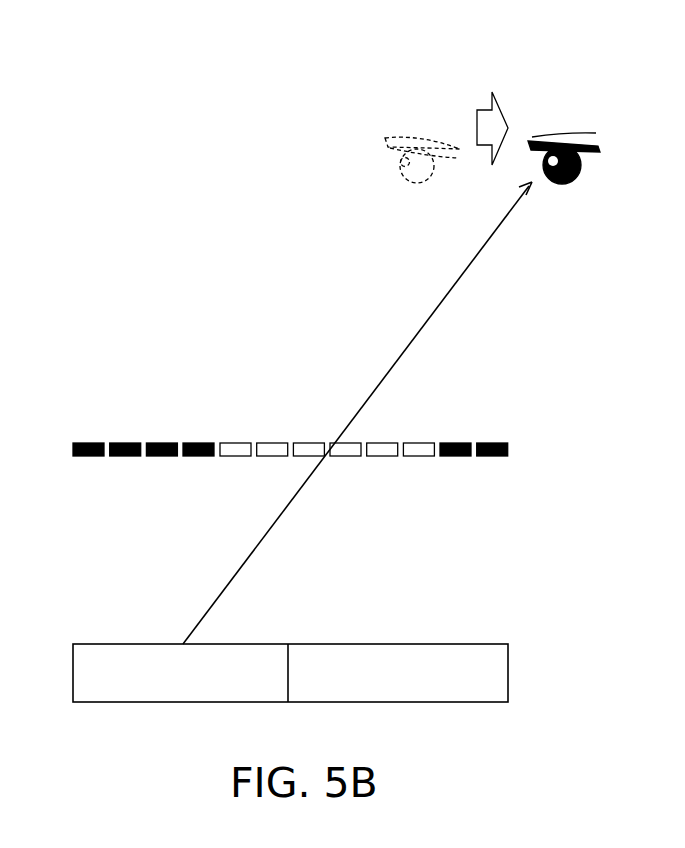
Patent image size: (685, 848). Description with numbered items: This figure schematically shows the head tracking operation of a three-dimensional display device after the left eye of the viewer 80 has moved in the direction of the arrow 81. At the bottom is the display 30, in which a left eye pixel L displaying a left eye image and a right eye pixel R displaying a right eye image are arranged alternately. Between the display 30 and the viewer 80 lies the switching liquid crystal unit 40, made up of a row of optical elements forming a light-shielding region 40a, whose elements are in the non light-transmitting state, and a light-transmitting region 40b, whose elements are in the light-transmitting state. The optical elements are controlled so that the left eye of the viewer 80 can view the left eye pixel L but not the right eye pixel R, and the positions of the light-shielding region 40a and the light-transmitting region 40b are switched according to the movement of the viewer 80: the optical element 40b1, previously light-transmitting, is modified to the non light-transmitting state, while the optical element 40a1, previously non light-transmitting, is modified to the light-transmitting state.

The display 30 is at (515, 675).
The switching liquid crystal unit 40 is at (346, 469).
The light-shielding region 40a is at (215, 438).
The optical element 40a1 is at (418, 457).
The light-transmitting region 40b is at (432, 438).
The optical element 40b1 is at (197, 457).
The viewer 80 is at (417, 137).
The arrow 81 is at (502, 113).